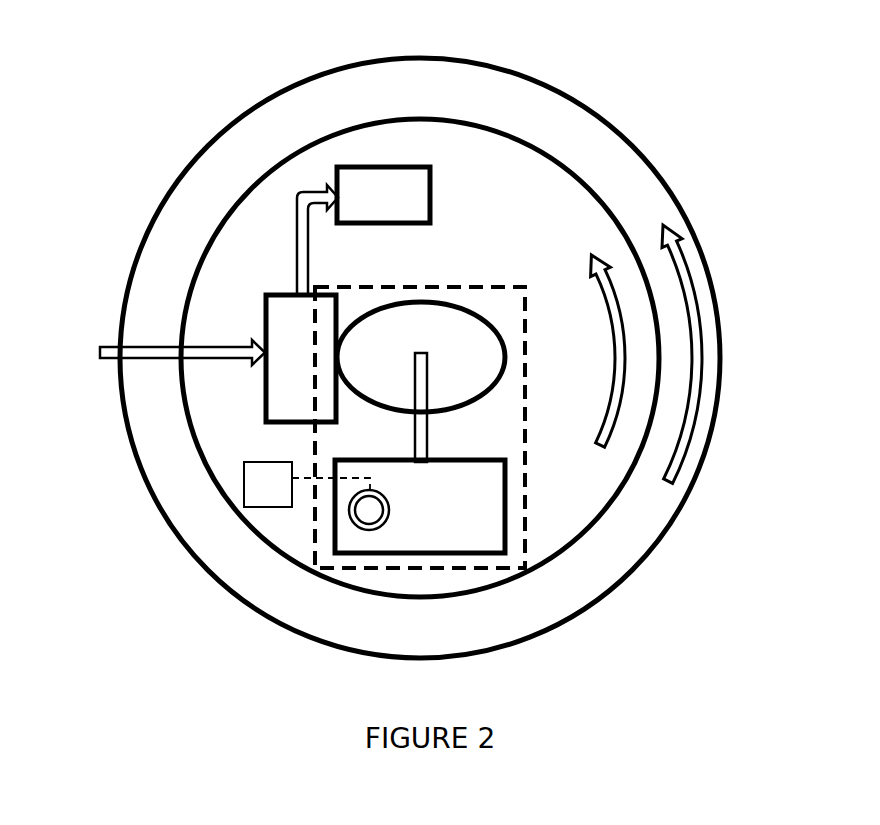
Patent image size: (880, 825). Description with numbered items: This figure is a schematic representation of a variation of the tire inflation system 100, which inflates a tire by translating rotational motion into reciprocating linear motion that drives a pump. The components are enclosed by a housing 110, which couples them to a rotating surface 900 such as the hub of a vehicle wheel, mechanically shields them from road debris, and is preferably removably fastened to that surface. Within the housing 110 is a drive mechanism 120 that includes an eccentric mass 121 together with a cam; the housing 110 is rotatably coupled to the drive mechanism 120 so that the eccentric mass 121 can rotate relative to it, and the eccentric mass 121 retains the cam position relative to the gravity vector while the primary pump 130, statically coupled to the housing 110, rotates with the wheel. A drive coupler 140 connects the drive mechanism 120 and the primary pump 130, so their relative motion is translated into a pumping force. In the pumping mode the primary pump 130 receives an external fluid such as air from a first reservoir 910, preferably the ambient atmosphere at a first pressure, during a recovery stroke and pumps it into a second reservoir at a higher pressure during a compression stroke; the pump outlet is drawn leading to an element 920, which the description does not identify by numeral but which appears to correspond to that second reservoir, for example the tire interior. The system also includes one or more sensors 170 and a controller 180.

The tire inflation system 100 is at (157, 104).
The housing 110 is at (513, 158).
The drive mechanism 120 is at (527, 344).
The eccentric mass 121 is at (482, 527).
The primary pump 130 is at (290, 325).
The drive coupler 140 is at (475, 377).
The sensors 170 is at (367, 520).
The controller 180 is at (270, 507).
The rotating surface 900 is at (571, 128).
The first reservoir 910 is at (146, 354).
The communication module 920 is at (358, 187).